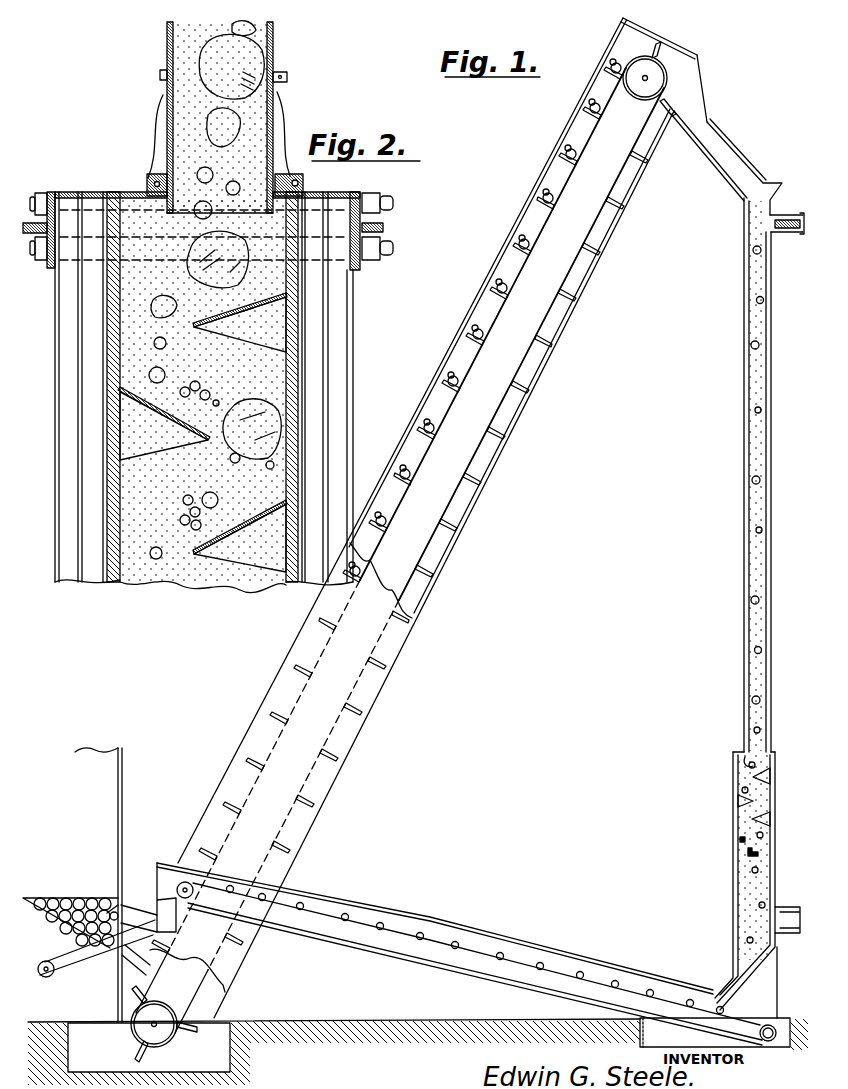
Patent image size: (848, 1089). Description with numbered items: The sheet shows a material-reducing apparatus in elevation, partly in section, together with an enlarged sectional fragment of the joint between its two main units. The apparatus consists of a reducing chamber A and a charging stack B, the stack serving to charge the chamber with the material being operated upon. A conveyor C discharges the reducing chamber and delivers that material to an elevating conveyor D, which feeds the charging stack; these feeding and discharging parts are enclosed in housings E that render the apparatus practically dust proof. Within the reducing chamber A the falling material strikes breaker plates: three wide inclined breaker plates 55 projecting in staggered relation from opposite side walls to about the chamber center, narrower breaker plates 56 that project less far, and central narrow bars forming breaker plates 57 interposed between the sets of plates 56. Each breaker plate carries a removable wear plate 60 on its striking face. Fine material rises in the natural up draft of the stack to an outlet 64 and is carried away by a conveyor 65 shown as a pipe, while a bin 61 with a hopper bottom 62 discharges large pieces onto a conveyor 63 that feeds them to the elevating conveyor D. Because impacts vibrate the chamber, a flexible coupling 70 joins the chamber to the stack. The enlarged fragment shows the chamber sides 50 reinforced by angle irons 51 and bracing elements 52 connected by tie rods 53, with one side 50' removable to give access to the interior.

In FIG. 1, the reducing chamber A is at (753, 849).
In FIG. 2, the reducing chamber A is at (300, 370).
In FIG. 1, the charging stack B is at (745, 637).
In FIG. 2, the charging stack B is at (273, 52).
In FIG. 1, the conveyor C is at (440, 962).
In FIG. 1, the elevating conveyor D is at (430, 549).
In FIG. 1, the housings E is at (427, 597).
In FIG. 2, the sides 50 is at (314, 404).
In FIG. 2, the side 50' is at (94, 404).
In FIG. 2, the angle irons 51 is at (350, 428).
In FIG. 2, the bracing elements 52 is at (55, 200).
In FIG. 2, the tie rods 53 is at (385, 202).
In FIG. 1, the breaker plates 55 is at (765, 762).
In FIG. 2, the breaker plates 55 is at (203, 434).
In FIG. 1, the breaker plates 56 is at (742, 847).
In FIG. 1, the breaker plates 57 is at (752, 858).
In FIG. 2, the wear plate 60 is at (300, 300).
In FIG. 1, the bin 61 is at (123, 793).
In FIG. 1, the hopper bottom 62 is at (100, 893).
In FIG. 1, the conveyor 63 is at (80, 964).
In FIG. 1, the outlet 64 is at (779, 212).
In FIG. 1, the conveyor 65 is at (800, 234).
In FIG. 2, the flexible coupling 70 is at (163, 140).